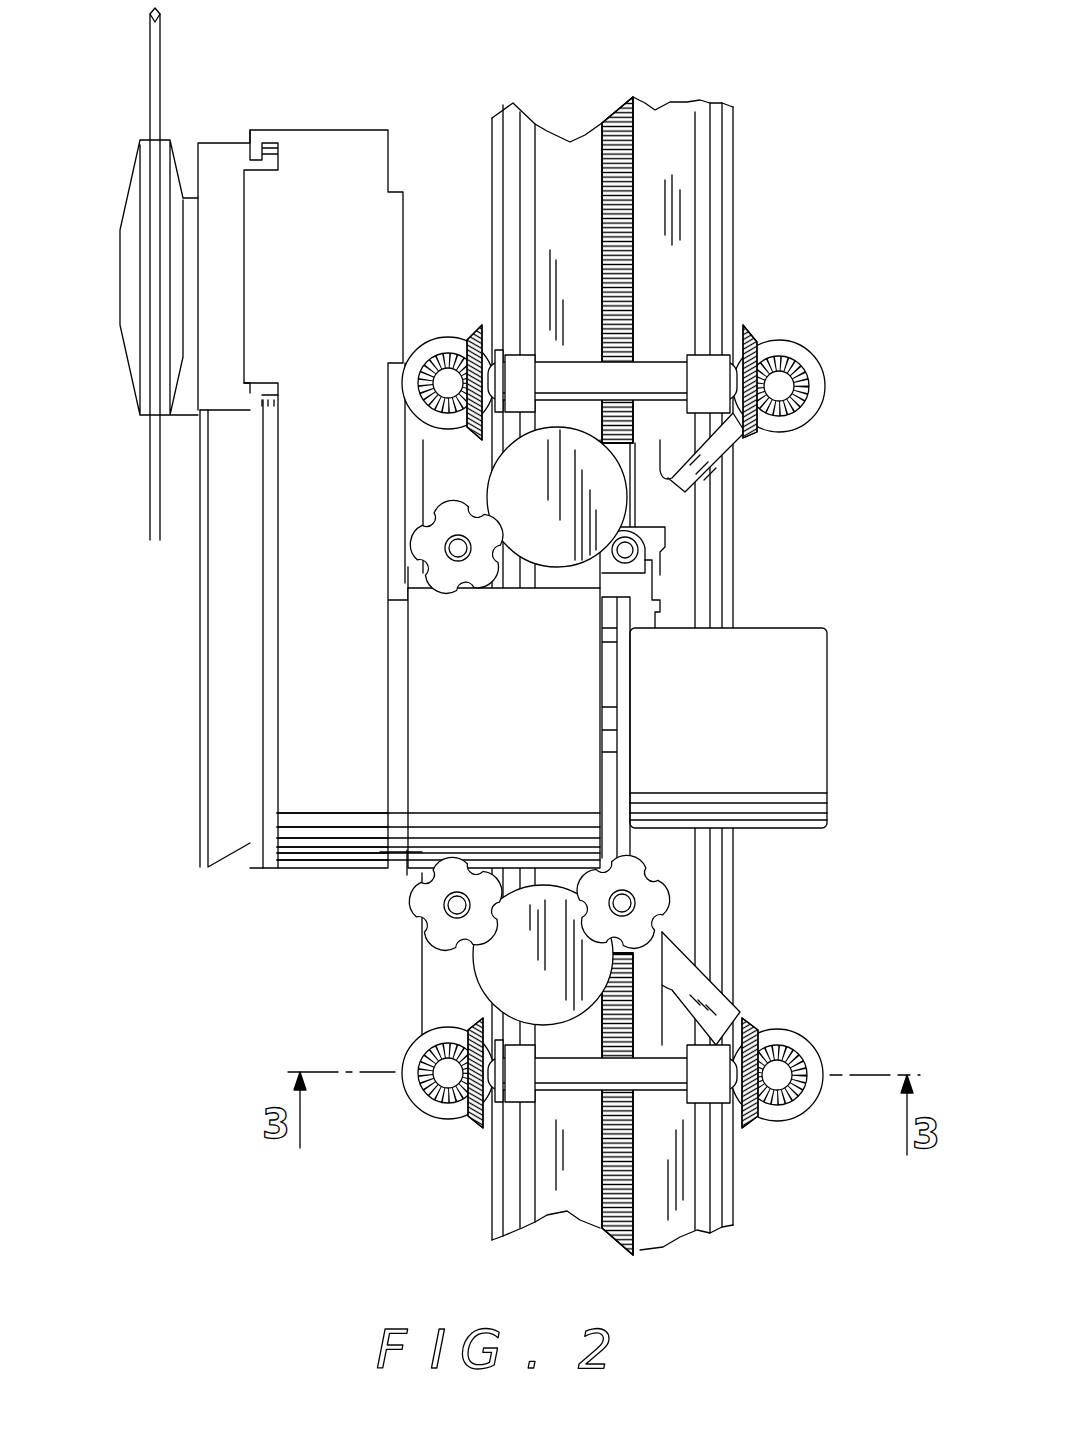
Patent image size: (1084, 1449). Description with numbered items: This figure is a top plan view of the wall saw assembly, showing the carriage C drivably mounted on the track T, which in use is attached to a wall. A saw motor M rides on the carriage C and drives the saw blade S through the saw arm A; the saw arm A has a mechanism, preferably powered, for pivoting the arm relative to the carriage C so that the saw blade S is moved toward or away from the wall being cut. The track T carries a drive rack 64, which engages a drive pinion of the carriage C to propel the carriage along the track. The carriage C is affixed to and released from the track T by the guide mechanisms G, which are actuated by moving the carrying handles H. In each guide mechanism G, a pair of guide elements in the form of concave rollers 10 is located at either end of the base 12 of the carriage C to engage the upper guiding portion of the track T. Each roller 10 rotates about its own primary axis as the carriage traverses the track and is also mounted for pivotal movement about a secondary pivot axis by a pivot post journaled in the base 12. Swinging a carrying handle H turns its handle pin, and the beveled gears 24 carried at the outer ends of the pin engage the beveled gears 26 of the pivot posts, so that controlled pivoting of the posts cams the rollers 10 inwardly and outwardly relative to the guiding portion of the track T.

The saw blade S is at (150, 52).
The saw arm A is at (205, 672).
The carriage C is at (388, 878).
The track T is at (546, 140).
The drive rack 64 is at (642, 125).
The carriage base 12 is at (700, 497).
The guide mechanism G is at (752, 316).
The carrying handle H is at (548, 374).
The beveled gear 24 is at (760, 338).
The concave roller 10 is at (428, 342).
The beveled gear 26 is at (802, 388).
The saw motor M is at (765, 635).